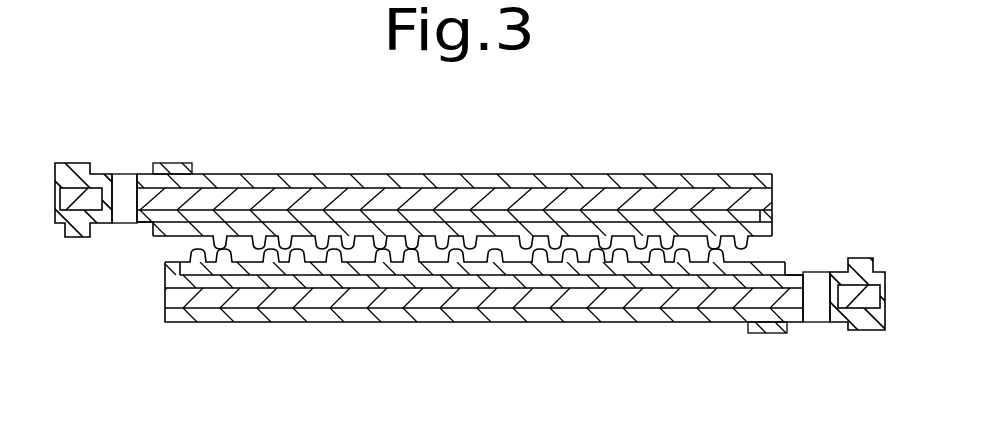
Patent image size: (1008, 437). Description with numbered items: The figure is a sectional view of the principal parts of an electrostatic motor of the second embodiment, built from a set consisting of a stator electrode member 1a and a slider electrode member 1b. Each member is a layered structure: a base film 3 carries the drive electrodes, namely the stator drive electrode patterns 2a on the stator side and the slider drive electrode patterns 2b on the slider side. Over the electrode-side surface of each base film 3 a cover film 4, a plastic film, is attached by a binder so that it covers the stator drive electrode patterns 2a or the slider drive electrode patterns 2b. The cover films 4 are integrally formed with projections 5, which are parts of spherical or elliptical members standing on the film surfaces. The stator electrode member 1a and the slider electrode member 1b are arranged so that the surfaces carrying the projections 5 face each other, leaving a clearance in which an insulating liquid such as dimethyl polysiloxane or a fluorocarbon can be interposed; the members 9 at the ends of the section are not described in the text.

The stator electrode member 1a is at (630, 330).
The slider electrode member 1b is at (306, 162).
The stator drive electrode patterns 2a is at (439, 290).
The slider drive electrode patterns 2b is at (420, 213).
The base films 3 is at (549, 197).
The cover films 4 is at (711, 180).
The projections 5 is at (250, 255).
The spacer member 9 is at (122, 184).